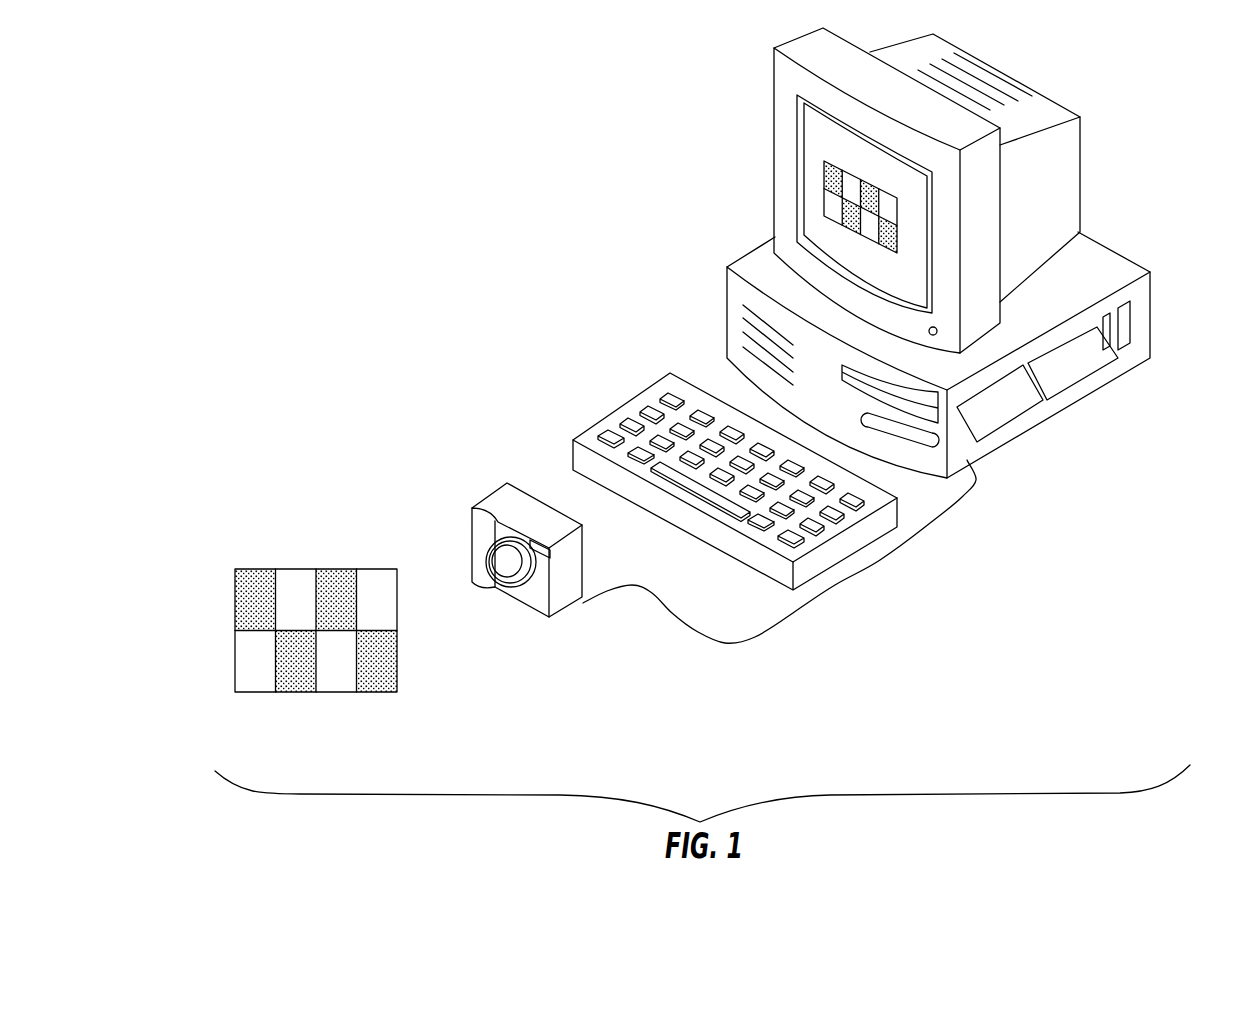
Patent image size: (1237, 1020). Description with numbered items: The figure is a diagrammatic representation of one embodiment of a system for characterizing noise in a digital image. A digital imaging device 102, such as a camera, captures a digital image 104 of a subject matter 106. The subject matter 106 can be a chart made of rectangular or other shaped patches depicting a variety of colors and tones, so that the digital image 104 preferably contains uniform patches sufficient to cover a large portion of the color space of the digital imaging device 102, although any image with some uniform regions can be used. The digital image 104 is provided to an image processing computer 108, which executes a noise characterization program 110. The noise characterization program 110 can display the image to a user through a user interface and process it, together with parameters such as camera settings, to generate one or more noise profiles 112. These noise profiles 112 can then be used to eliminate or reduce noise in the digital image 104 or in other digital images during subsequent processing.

The digital imaging device 102 is at (495, 502).
The digital image 104 is at (823, 180).
The subject matter 106 is at (300, 568).
The image processing computer 108 is at (727, 313).
The noise characterization program 110 is at (1003, 410).
The noise profiles 112 is at (1078, 373).